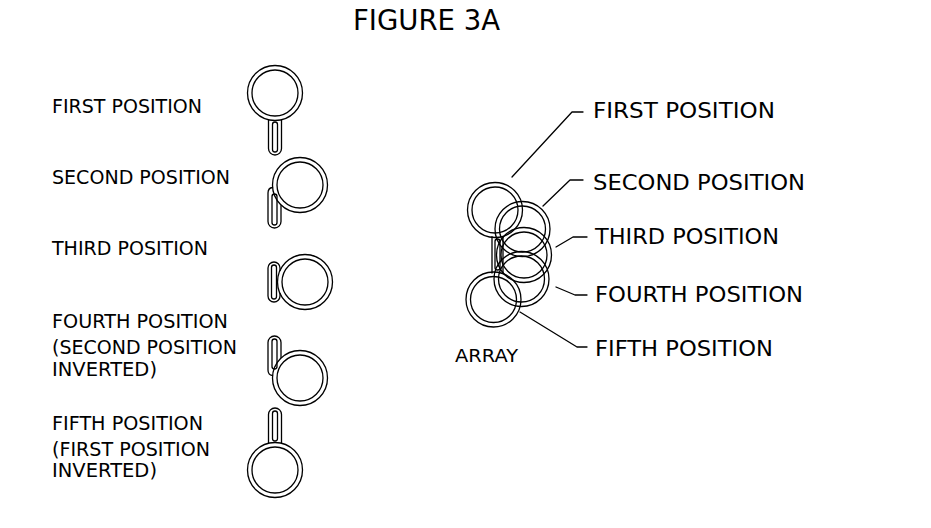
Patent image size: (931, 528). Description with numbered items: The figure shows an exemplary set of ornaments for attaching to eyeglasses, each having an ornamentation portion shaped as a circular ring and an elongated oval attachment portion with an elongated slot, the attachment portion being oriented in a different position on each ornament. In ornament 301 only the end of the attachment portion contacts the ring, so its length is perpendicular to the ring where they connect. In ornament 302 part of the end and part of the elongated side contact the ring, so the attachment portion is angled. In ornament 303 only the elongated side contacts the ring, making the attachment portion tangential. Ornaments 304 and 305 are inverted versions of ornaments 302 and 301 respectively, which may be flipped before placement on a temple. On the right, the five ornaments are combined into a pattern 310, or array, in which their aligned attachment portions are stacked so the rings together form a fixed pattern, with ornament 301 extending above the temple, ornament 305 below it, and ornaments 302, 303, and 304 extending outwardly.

The ornament 301 is at (318, 97).
The ornament 302 is at (337, 178).
The ornament 303 is at (340, 273).
The ornament 304 is at (337, 377).
The ornament 305 is at (312, 467).
The pattern 310 is at (495, 174).